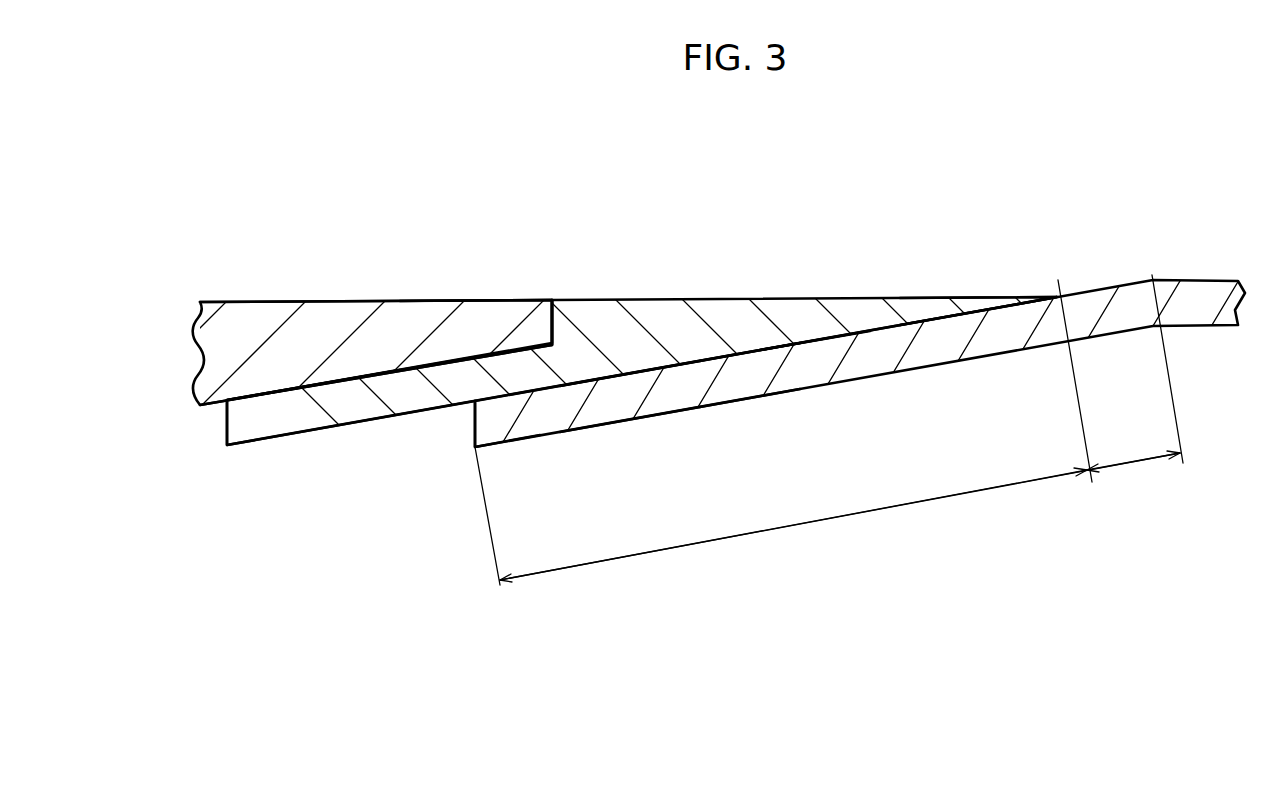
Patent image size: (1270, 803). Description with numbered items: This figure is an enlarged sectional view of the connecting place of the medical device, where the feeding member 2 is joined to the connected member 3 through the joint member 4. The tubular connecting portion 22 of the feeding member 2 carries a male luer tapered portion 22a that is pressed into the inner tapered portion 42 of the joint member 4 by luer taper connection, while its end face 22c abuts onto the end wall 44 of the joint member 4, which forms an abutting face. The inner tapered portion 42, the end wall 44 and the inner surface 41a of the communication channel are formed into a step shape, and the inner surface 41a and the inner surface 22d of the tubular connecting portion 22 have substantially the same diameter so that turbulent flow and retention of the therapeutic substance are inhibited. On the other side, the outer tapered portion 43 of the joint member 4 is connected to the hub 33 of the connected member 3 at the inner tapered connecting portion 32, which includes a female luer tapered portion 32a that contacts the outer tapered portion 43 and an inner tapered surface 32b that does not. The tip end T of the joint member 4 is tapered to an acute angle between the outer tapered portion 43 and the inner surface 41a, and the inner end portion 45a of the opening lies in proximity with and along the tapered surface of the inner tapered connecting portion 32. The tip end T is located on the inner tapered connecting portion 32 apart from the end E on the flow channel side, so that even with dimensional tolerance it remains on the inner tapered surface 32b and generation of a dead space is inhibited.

The feeding member 2 is at (266, 293).
The tubular connecting portion 22 is at (328, 319).
The male luer tapered portion 22a is at (378, 377).
The end face 22c is at (553, 330).
The inner surface 22d is at (508, 300).
The connected member 3 is at (1113, 340).
The inner tapered connecting portion 32 is at (1121, 557).
The female luer tapered portion 32a is at (797, 527).
The inner tapered surface 32b is at (1139, 468).
The hub 33 is at (742, 388).
The joint member 4 is at (775, 285).
The inner surface of the communication channel 41a is at (607, 298).
The inner tapered portion 42 is at (327, 375).
The outer tapered portion 43 is at (815, 341).
The end wall 44 is at (552, 326).
The inner end portion 45a is at (978, 297).
The tip end T is at (1058, 280).
The end E is at (1152, 275).